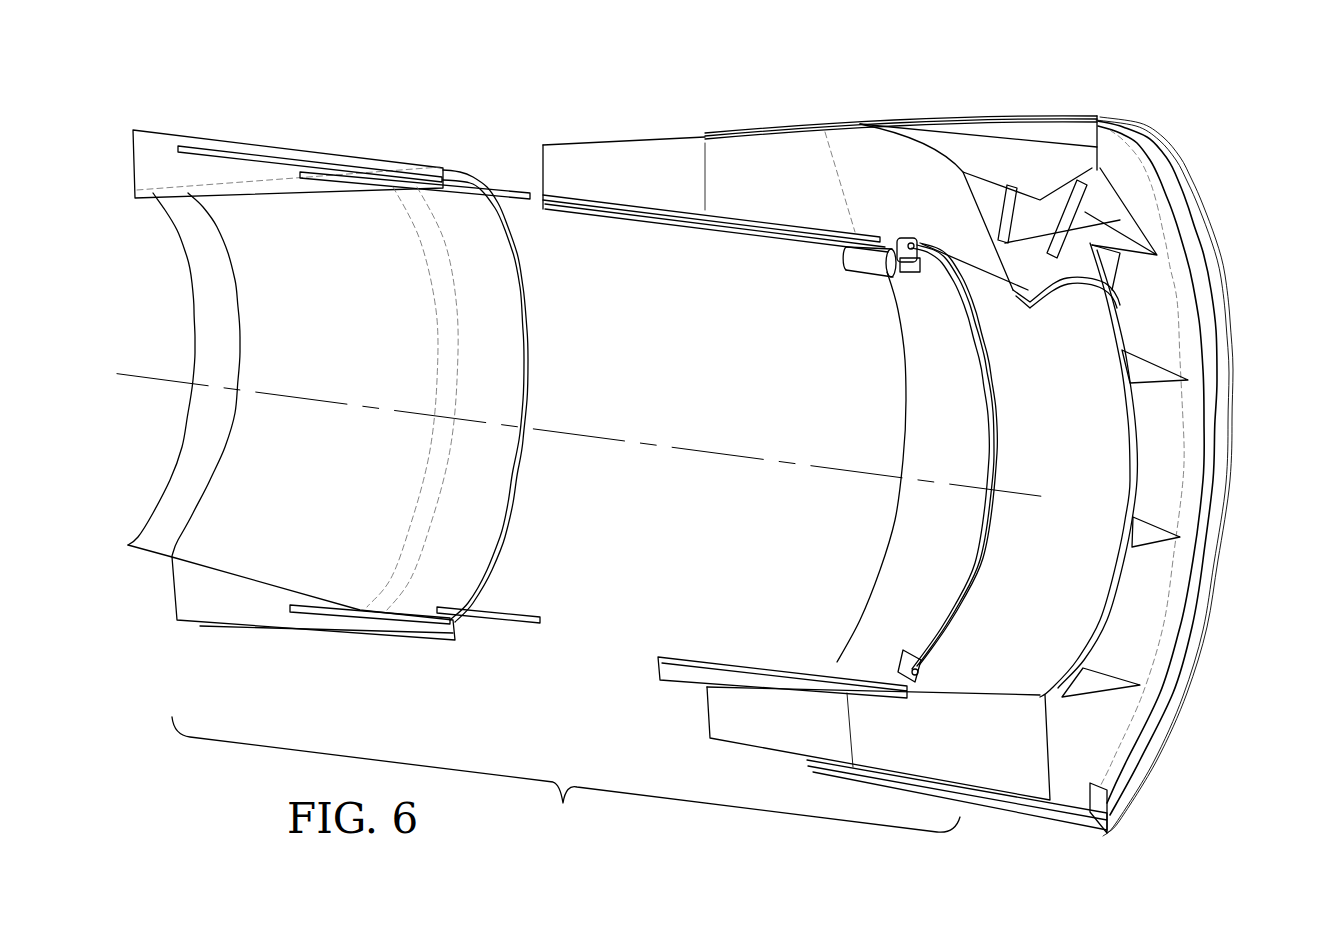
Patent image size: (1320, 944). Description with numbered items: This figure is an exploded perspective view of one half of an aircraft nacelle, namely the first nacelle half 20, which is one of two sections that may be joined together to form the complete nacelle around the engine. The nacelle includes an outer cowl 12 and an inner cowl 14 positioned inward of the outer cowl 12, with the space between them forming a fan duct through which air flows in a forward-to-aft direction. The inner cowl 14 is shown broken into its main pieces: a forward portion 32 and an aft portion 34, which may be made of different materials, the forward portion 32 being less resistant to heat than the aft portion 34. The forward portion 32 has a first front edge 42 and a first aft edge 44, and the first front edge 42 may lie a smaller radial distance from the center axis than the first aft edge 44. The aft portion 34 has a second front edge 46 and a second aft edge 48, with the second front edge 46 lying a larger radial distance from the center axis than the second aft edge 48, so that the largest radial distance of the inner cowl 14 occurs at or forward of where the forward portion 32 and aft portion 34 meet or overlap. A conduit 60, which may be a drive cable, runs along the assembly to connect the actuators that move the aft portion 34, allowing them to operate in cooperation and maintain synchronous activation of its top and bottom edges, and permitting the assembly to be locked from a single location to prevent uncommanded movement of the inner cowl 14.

The outer cowl 12 is at (1180, 165).
The inner cowl 14 is at (1083, 603).
The first nacelle half 20 is at (866, 88).
The forward portion 32 is at (1080, 393).
The aft portion 34 is at (352, 207).
The first front edge 42 is at (1135, 502).
The first aft edge 44 is at (905, 400).
The second front edge 46 is at (531, 358).
The second aft edge 48 is at (193, 326).
The conduit 60 is at (990, 455).